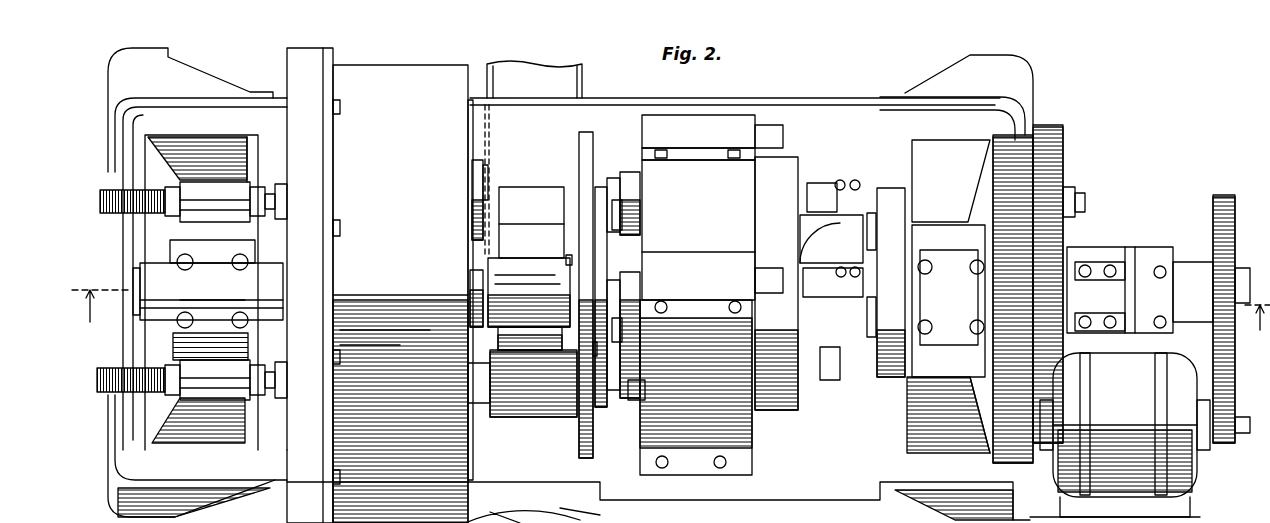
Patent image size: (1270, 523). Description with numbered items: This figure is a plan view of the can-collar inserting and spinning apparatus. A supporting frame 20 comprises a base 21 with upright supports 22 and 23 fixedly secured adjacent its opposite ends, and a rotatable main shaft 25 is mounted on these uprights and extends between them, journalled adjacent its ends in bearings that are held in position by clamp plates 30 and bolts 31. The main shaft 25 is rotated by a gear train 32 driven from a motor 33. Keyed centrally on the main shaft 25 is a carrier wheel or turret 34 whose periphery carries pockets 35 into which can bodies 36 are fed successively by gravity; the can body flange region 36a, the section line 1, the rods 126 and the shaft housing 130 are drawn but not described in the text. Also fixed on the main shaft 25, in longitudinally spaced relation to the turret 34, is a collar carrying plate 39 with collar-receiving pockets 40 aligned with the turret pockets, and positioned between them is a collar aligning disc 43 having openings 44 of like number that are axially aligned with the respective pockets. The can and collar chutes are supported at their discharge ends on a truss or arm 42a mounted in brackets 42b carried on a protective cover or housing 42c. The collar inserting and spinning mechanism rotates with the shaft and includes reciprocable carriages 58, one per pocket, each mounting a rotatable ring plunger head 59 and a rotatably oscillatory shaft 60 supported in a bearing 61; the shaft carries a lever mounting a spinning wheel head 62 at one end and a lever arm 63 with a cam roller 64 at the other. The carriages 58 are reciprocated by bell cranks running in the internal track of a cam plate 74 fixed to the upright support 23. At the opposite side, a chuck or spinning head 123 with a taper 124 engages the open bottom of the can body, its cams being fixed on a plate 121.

The section line 1 is at (671, 322).
The supporting frame 20 is at (810, 477).
The base 21 is at (866, 471).
The upright support 22 is at (245, 243).
The upright support 23 is at (965, 247).
The main shaft 25 is at (133, 277).
The clamp plates 30 is at (950, 348).
The bolts 31 is at (240, 312).
The gear train 32 is at (1020, 258).
The motor 33 is at (1130, 394).
The carrier wheel or turret 34 is at (530, 185).
The pockets 35 is at (545, 224).
The can bodies 36 is at (548, 284).
The gear flange 36a is at (566, 260).
The collar carrying plate 39 is at (598, 350).
The collar-receiving pockets 40 is at (600, 185).
The truss or arm 42a is at (775, 135).
The brackets 42b is at (705, 122).
The protective cover or housing 42c is at (697, 317).
The collar aligning disc 43 is at (578, 440).
The openings 44 is at (615, 522).
The reciprocable carriages 58 is at (810, 255).
The ring plunger head 59 is at (625, 208).
The rotatably oscillatory shaft 60 is at (632, 396).
The bearing 61 is at (822, 183).
The spinning wheel head 62 is at (618, 195).
The lever arm 63 is at (845, 403).
The cam roller 64 is at (871, 213).
The cam plate 74 is at (893, 204).
The plate 121 is at (303, 450).
The chuck or spinning head 123 is at (478, 190).
The taper 124 is at (484, 168).
The rods 126 is at (112, 205).
The shaft housing 130 is at (580, 80).